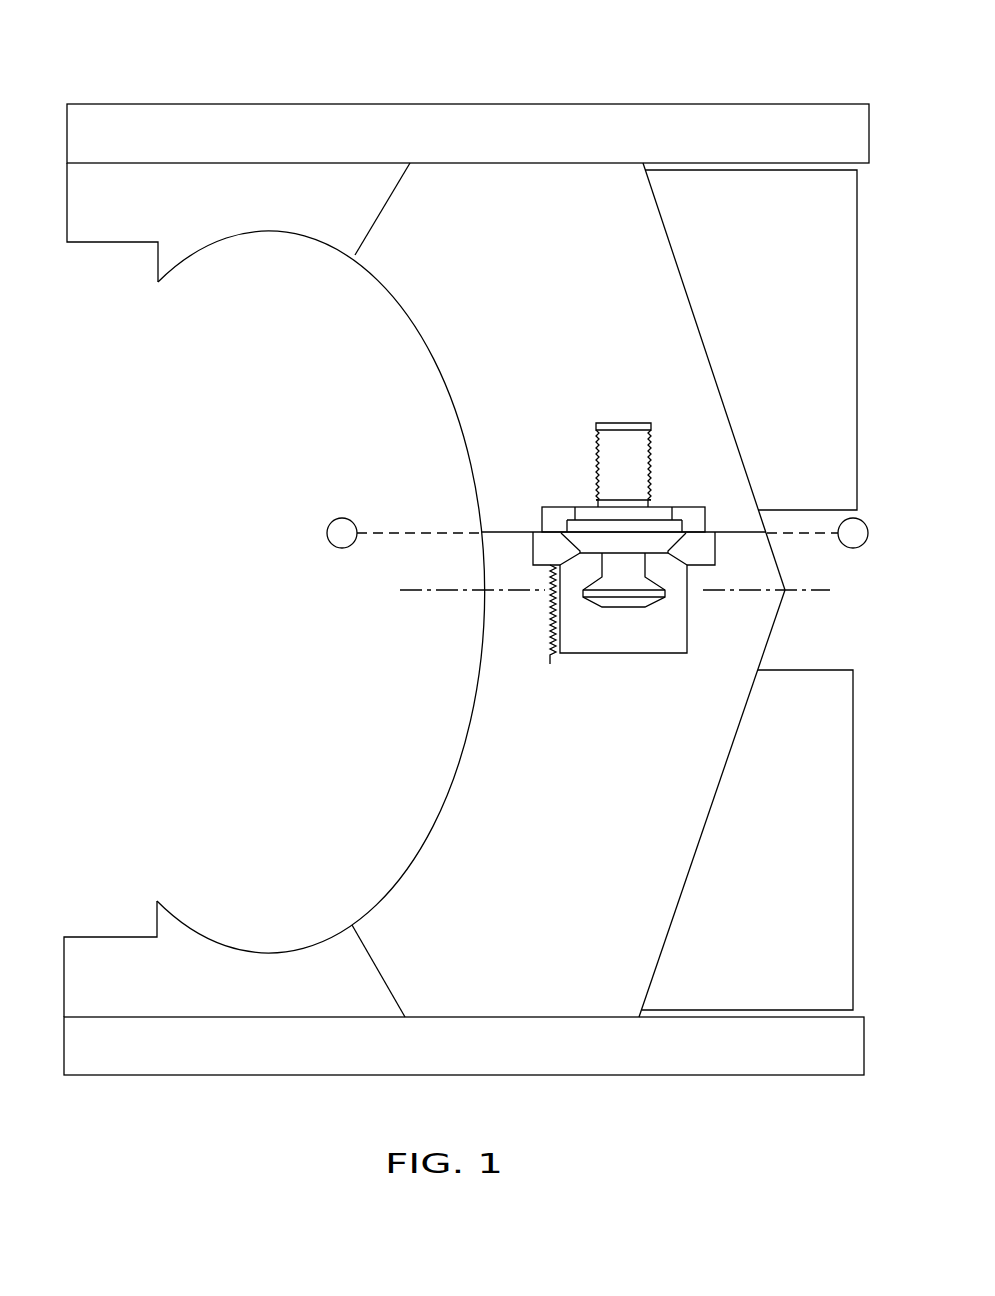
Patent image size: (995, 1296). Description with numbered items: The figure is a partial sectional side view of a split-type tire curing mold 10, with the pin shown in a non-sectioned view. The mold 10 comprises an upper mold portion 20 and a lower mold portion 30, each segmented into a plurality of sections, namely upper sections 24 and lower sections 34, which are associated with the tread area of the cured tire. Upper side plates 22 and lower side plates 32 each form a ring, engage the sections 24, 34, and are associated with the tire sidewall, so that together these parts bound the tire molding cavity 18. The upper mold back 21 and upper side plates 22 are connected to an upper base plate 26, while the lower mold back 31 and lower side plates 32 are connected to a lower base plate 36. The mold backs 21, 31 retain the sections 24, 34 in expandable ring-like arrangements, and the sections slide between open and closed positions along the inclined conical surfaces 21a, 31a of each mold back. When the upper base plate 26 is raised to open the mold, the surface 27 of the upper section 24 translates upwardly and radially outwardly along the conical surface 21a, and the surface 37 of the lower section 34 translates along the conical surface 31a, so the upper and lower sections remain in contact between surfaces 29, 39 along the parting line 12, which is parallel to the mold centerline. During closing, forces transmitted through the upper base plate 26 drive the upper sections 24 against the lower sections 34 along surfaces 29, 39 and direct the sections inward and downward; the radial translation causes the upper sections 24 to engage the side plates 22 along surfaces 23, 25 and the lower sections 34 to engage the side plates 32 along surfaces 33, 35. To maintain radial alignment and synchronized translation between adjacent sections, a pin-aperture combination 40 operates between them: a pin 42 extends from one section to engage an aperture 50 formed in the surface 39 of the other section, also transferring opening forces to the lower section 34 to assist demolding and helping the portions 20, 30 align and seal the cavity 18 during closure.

The split-type tire curing mold 10 is at (148, 75).
The parting line 12 is at (497, 534).
The tire molding cavity 18 is at (236, 522).
The upper mold portion 20 is at (222, 295).
The upper mold back 21 is at (802, 300).
The inclined conical surface of upper mold back 21a is at (712, 363).
The upper side plate 22 is at (235, 213).
The surface 23 is at (388, 198).
The upper section 24 is at (569, 268).
The surface 25 is at (370, 231).
The upper base plate 26 is at (598, 143).
The surface of upper section 27 is at (691, 312).
The surface 29 is at (512, 532).
The lower mold portion 30 is at (208, 868).
The lower mold back 31 is at (782, 927).
The inclined conical surface of lower mold back 31a is at (725, 771).
The lower side plate 32 is at (222, 1000).
The surface 33 is at (377, 971).
The lower section 34 is at (550, 923).
The surface 35 is at (367, 948).
The lower base plate 36 is at (575, 1067).
The surface of lower section 37 is at (705, 820).
The surface 39 is at (528, 538).
The pin-aperture combination 40 is at (557, 485).
The pin 42 is at (637, 468).
The aperture 50 is at (698, 605).